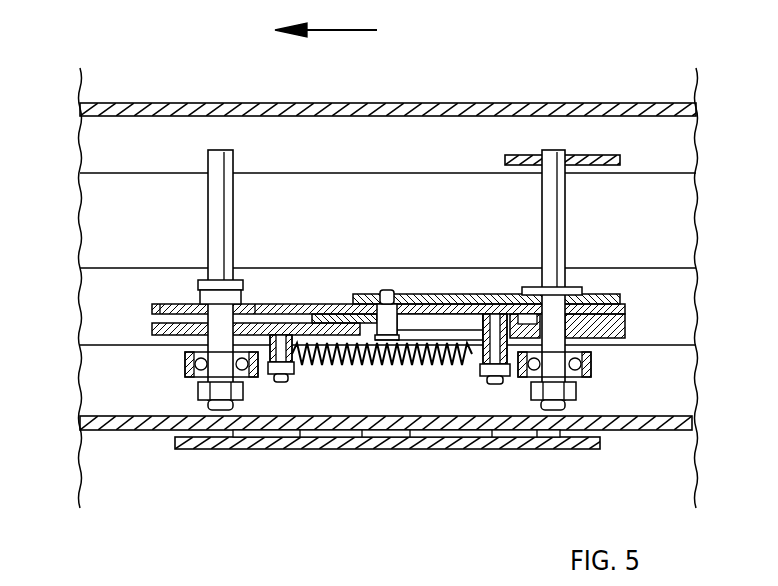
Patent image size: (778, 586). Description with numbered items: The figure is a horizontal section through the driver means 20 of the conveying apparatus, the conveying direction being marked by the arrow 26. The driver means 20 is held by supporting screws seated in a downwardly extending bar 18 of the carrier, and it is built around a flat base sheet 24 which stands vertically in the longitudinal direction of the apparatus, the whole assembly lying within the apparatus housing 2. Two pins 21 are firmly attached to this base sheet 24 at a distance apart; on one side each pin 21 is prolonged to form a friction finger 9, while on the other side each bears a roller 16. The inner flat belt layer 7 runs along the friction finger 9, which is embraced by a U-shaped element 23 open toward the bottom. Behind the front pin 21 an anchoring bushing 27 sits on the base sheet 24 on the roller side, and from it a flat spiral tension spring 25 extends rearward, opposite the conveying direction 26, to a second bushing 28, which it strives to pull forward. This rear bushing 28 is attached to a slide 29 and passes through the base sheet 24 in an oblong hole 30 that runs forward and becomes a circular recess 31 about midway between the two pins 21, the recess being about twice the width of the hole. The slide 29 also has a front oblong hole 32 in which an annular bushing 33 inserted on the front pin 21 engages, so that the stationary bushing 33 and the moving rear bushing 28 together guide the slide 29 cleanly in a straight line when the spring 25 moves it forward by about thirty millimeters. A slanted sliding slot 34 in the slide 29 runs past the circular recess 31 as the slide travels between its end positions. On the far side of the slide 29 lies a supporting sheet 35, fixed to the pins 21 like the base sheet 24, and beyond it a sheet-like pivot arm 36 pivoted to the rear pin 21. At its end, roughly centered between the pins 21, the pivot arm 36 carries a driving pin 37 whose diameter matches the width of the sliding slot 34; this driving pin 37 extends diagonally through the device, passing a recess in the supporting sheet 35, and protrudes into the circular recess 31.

The housing wall 2 is at (520, 103).
The inner flat belt layer 7 is at (697, 204).
The friction finger 9 is at (222, 205).
The roller 16 is at (186, 363).
The downwardly extending bar 18 is at (585, 449).
The driver means 20 is at (480, 460).
The pin 21 is at (205, 281).
The U-shaped element 23 is at (513, 156).
The base sheet 24 is at (152, 328).
The tension spring 25 is at (340, 366).
The arrow 26 is at (348, 31).
The anchoring bushing 27 is at (288, 375).
The second bushing 28 is at (490, 377).
The slide 29 is at (152, 306).
The oblong hole 30 is at (432, 341).
The circular recess 31 is at (387, 341).
The front oblong hole 32 is at (292, 316).
The annular bushing 33 is at (258, 305).
The sliding slot 34 is at (460, 295).
The supporting sheet 35 is at (165, 304).
The pivot arm 36 is at (418, 305).
The driving pin 37 is at (383, 291).